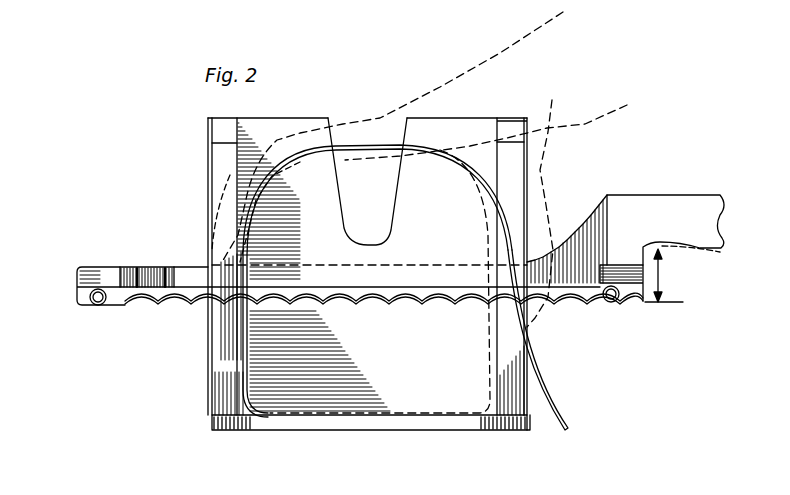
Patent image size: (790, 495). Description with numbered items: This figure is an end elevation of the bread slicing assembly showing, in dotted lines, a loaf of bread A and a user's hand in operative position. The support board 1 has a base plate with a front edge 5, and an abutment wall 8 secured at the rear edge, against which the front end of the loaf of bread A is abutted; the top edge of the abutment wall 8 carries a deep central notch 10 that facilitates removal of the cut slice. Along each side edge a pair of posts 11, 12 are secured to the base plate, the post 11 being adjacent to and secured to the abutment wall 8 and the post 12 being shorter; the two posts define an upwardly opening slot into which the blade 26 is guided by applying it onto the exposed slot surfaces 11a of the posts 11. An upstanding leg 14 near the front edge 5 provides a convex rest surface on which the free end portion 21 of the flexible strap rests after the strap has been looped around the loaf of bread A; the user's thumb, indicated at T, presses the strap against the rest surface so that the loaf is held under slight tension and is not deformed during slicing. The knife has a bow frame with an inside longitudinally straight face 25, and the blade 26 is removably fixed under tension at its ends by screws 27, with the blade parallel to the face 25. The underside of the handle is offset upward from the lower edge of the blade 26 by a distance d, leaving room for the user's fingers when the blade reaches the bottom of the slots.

The support board 1 is at (532, 430).
The front edge 5 is at (282, 423).
The abutment wall 8 is at (409, 365).
The central notch 10 is at (348, 128).
The post 11 is at (222, 120).
The exposed slot surface 11a is at (220, 136).
The post 12 is at (222, 167).
The upstanding leg 14 is at (232, 326).
The free end portion of strap 21 is at (552, 405).
The inside longitudinally straight face 25 is at (192, 272).
The blade 26 is at (150, 290).
The screw 27 is at (98, 289).
The thumb T is at (552, 203).
The loaf of bread A is at (493, 290).
The distance d is at (664, 275).